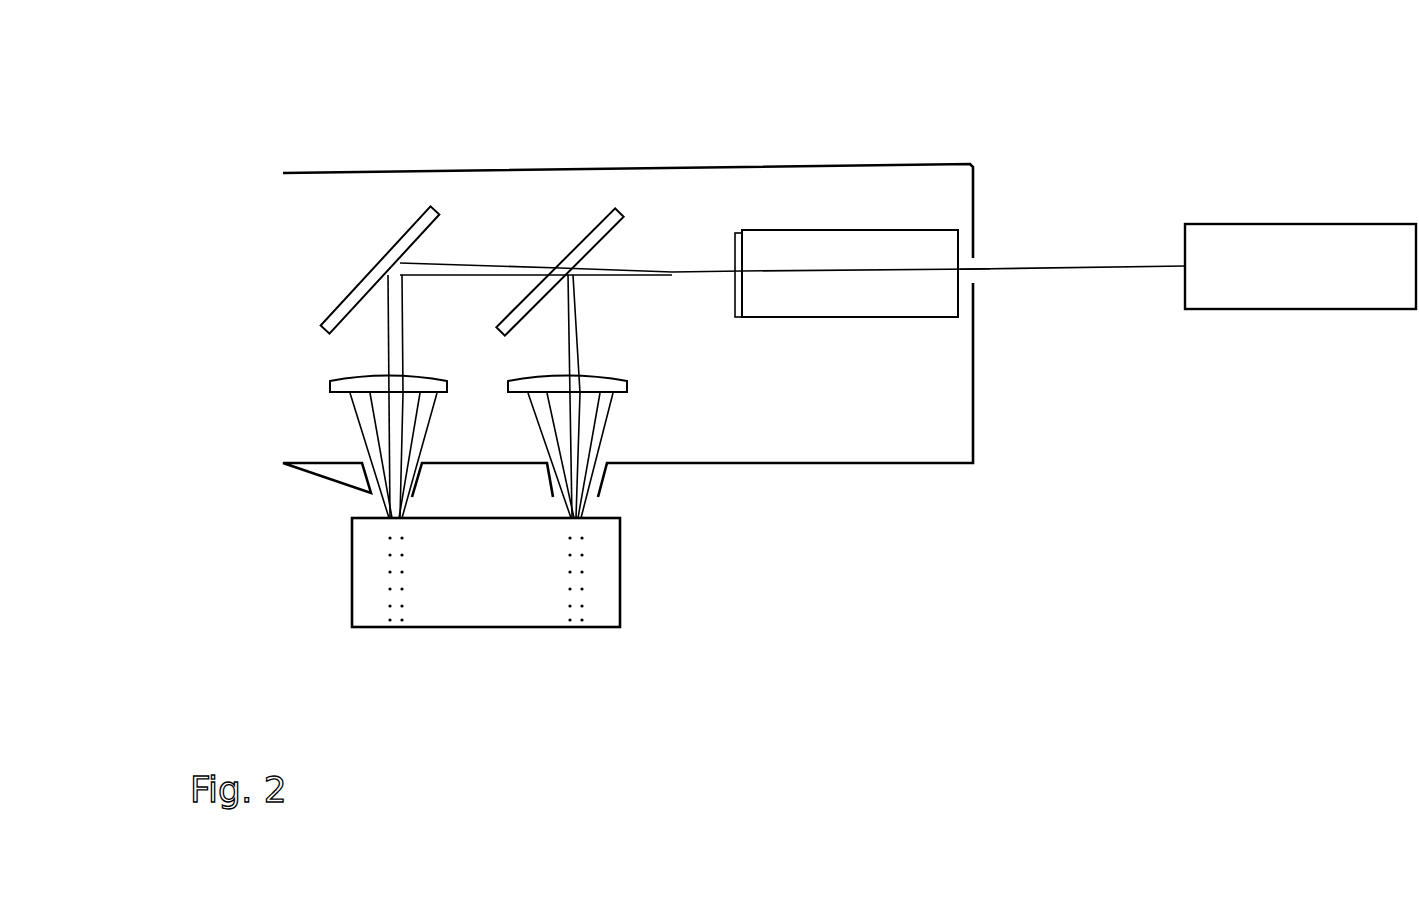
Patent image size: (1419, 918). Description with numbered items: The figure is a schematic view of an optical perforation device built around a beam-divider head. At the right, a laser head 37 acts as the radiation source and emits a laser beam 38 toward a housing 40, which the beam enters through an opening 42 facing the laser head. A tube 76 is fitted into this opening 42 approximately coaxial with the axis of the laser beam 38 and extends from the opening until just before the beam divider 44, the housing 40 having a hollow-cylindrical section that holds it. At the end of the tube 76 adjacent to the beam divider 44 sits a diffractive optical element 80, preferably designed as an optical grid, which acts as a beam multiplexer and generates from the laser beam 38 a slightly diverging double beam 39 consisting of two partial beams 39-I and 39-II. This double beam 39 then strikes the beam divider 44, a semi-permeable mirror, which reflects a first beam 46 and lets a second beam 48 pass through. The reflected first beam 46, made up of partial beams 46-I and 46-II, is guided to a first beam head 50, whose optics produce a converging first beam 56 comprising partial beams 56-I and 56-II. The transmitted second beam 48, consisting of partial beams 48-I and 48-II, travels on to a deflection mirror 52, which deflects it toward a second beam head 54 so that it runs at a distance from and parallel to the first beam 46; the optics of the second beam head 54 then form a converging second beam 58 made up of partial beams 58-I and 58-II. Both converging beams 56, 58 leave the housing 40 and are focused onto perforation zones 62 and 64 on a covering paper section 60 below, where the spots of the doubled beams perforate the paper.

The laser head 37 is at (1280, 223).
The laser beam 38 is at (1087, 268).
The double beam 39 is at (697, 262).
The partial beam 39-I is at (643, 263).
The partial beam 39-II is at (640, 270).
The housing 40 is at (947, 164).
The opening 42 is at (987, 257).
The beam divider 44 is at (565, 248).
The first beam 46 is at (573, 302).
The partial beam 46-I is at (570, 327).
The partial beam 46-II is at (582, 353).
The second beam 48 is at (508, 263).
The partial beam 48-I is at (387, 343).
The partial beam 48-II is at (403, 310).
The first beam head 50 is at (625, 382).
The deflection mirror 52 is at (417, 216).
The second beam head 54 is at (330, 387).
The converging first beam 56 is at (589, 458).
The partial beam 56-I is at (541, 432).
The partial beam 56-II is at (607, 428).
The converging second beam 58 is at (346, 455).
The partial beam 58-I is at (367, 442).
The partial beam 58-II is at (432, 414).
The covering paper section 60 is at (473, 602).
The perforation zone 62 is at (394, 634).
The perforation zone 64 is at (578, 634).
The tube 76 is at (870, 240).
The diffractive optical element 80 is at (738, 250).